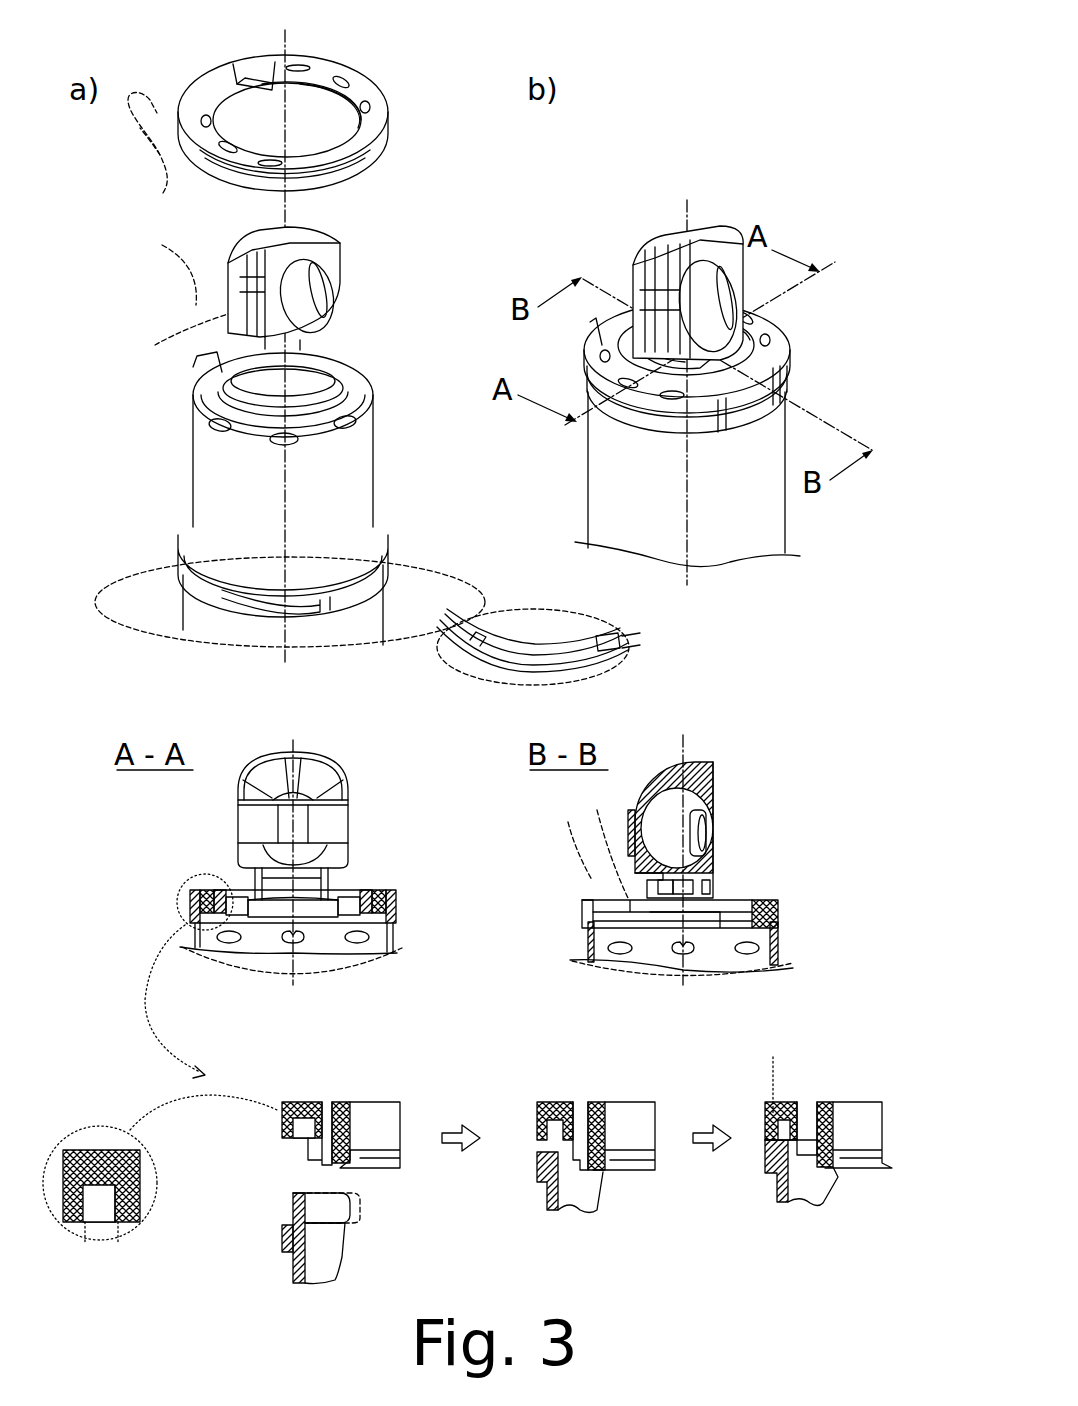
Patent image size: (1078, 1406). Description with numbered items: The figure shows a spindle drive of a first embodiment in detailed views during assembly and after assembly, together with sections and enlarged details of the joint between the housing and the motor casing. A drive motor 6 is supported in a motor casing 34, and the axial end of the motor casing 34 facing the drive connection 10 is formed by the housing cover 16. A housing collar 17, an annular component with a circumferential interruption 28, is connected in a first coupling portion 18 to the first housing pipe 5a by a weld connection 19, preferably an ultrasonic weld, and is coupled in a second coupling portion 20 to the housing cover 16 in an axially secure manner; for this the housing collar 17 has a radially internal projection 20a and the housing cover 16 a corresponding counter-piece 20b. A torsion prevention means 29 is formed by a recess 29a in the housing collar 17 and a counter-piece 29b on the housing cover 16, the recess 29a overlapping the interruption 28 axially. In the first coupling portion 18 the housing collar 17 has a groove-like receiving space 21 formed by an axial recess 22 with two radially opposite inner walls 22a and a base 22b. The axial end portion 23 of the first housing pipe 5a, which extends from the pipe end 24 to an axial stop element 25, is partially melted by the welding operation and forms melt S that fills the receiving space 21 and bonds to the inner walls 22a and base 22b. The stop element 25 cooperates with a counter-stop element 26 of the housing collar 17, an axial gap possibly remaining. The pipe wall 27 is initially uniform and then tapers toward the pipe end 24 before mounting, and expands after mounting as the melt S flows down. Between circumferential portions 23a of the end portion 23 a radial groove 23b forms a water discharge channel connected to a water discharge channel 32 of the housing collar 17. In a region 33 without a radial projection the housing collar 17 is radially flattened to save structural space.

The first housing pipe 5a is at (180, 617).
The drive motor 6 is at (215, 470).
The drive connection 10 is at (332, 262).
The housing cover 16 is at (355, 327).
The housing collar 17 is at (378, 96).
The first coupling portion 18 is at (795, 382).
The weld connection 19 is at (799, 1112).
The second coupling portion 20 is at (738, 358).
The radially internal projection 20a is at (310, 124).
The counter-piece 20b is at (335, 348).
The receiving space 21 is at (380, 166).
The axial recess 22 is at (92, 1228).
The inner wall 22a is at (105, 1193).
The base 22b is at (130, 1183).
The axial end portion 23 is at (537, 657).
The circumferential portions 23a is at (567, 652).
The radial groove 23b is at (600, 627).
The pipe end 24 is at (502, 630).
The axial stop element 25 is at (285, 1217).
The counter-stop element 26 is at (75, 1228).
The pipe wall 27 is at (290, 1268).
The circumferential interruption 28 is at (236, 110).
The torsion prevention means 29 is at (100, 175).
The recess 29a is at (134, 152).
The counter-piece 29b is at (176, 288).
The water discharge channel 32 is at (352, 82).
The region without a radial projection 33 is at (797, 433).
The motor casing 34 is at (357, 467).
The melt S is at (768, 1069).